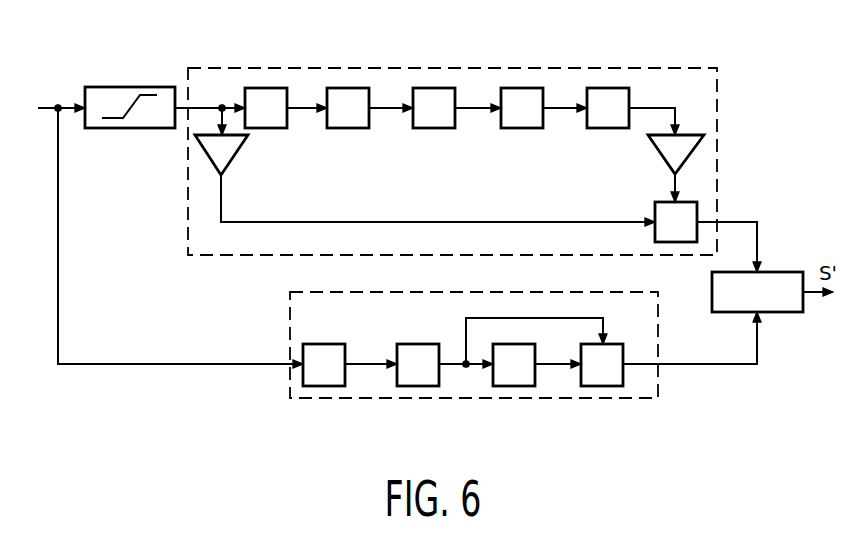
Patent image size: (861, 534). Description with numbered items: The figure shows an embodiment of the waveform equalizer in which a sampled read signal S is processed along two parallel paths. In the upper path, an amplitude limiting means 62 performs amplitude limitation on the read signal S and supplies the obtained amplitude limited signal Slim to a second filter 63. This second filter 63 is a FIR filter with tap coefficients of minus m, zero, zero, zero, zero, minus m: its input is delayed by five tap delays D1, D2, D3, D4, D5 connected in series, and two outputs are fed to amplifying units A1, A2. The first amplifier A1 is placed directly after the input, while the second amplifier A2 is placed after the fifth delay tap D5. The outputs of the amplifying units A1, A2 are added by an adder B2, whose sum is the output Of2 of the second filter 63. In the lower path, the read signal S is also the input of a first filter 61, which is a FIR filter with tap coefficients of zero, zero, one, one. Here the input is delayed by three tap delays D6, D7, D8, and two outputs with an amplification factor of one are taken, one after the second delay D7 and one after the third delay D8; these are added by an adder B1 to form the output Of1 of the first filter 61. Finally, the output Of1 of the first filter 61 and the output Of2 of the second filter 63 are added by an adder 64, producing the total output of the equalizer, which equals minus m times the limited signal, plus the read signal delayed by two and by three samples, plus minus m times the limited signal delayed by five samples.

The read signal S is at (161, 232).
The amplitude limiting means 62 is at (105, 98).
The amplitude limited signal Slim is at (213, 107).
The second filter 63 is at (708, 83).
The tap delay D1 is at (281, 88).
The tap delay D2 is at (360, 88).
The tap delay D3 is at (447, 88).
The tap delay D4 is at (534, 88).
The fifth delay tap D5 is at (622, 88).
The first amplifier A1 is at (230, 158).
The second amplifier A2 is at (663, 163).
The adder B2 is at (655, 207).
The output of the second filter Of2 is at (731, 232).
The adder 64 is at (713, 282).
The output of the first filter Of1 is at (692, 338).
The first filter 61 is at (290, 313).
The tap delay D6 is at (317, 387).
The second delay D7 is at (411, 387).
The third delay D8 is at (506, 387).
The adder B1 is at (591, 387).